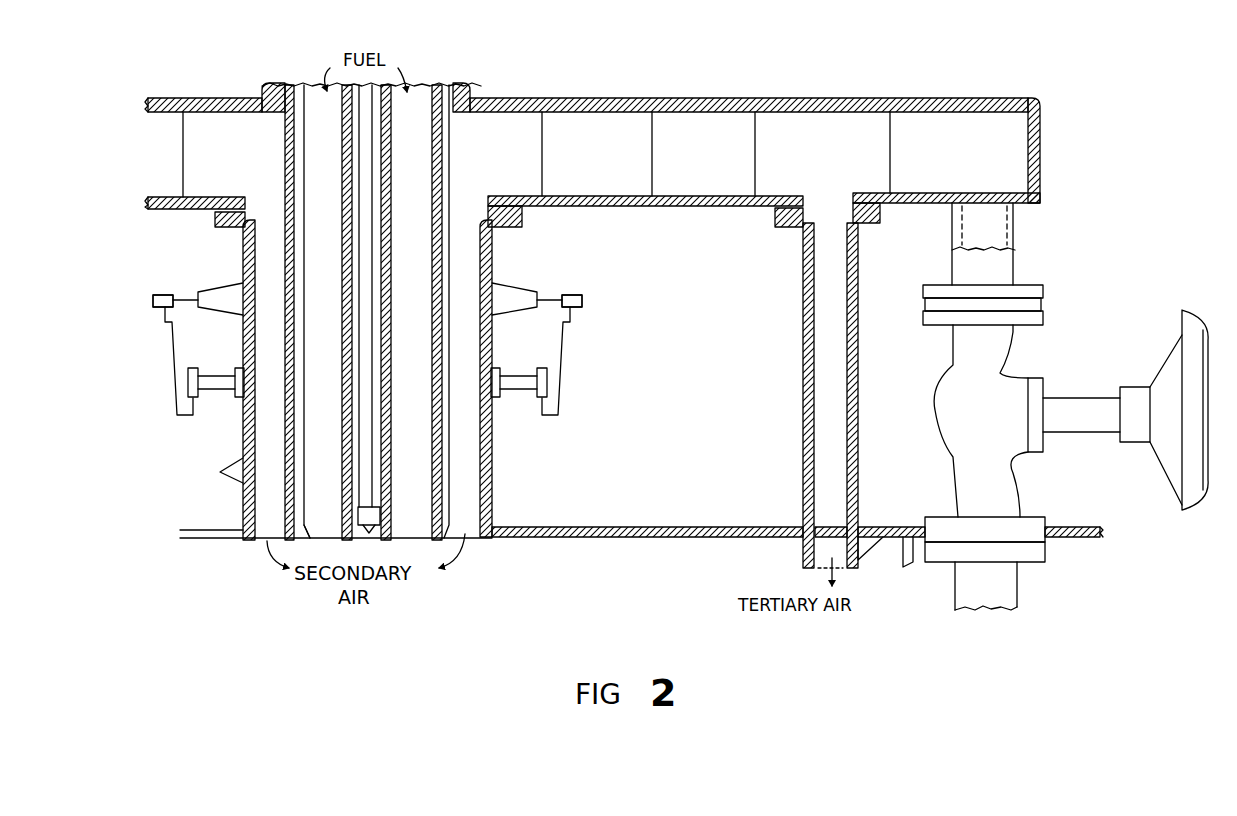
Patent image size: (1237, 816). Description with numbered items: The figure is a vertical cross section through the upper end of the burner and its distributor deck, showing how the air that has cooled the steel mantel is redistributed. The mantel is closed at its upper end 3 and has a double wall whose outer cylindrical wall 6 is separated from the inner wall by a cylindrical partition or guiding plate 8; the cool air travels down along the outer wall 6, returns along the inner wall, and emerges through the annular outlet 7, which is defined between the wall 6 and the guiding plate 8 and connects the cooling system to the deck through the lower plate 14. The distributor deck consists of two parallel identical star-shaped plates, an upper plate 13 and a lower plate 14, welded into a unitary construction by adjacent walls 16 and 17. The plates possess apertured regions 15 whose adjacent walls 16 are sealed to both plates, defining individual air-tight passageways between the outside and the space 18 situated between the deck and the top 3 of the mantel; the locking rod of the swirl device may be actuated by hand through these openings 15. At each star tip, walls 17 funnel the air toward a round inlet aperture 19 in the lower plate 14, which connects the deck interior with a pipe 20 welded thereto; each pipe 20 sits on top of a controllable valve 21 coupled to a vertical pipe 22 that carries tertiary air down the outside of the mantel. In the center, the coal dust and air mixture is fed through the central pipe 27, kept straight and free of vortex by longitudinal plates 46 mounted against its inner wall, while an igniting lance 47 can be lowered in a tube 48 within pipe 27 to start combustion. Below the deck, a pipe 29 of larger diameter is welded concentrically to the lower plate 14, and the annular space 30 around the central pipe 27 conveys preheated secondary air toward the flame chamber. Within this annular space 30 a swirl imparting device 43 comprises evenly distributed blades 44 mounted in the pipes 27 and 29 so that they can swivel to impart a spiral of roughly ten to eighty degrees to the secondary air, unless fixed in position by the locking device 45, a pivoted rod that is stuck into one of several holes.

The closed upper end of the mantel 3 is at (550, 540).
The outer cylindrical wall 6 is at (803, 498).
The annular outlet 7 is at (822, 410).
The guiding plate 8 is at (857, 456).
The upper star-shaped plate 13 is at (843, 97).
The lower star-shaped plate 14 is at (705, 206).
The apertured regions 15 is at (612, 98).
The adjacent walls 16 is at (454, 154).
The adjacent walls of star extensions 17 is at (947, 127).
The space 18 is at (600, 513).
The inlet aperture 19 is at (990, 195).
The pipe 20 is at (1008, 272).
The controllable valve 21 is at (1013, 452).
The vertical pipe 22 is at (1018, 572).
The central pipe 27 is at (283, 152).
The pipe 29 is at (488, 590).
The annular space 30 is at (267, 520).
The swirl imparting device 43 is at (590, 354).
The blades 44 is at (260, 422).
The locking device 45 is at (170, 367).
The longitudinal plates 46 is at (306, 528).
The igniting lance 47 is at (370, 531).
The tube 48 is at (342, 117).